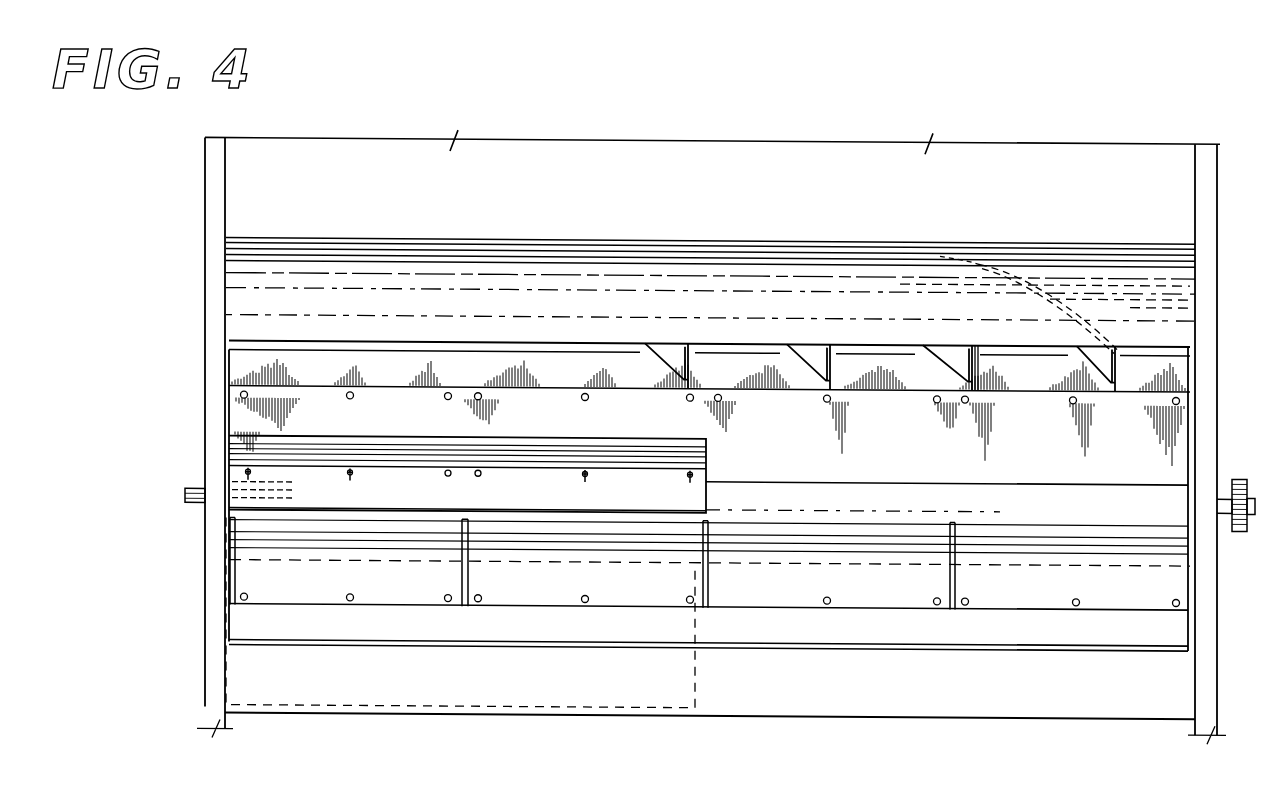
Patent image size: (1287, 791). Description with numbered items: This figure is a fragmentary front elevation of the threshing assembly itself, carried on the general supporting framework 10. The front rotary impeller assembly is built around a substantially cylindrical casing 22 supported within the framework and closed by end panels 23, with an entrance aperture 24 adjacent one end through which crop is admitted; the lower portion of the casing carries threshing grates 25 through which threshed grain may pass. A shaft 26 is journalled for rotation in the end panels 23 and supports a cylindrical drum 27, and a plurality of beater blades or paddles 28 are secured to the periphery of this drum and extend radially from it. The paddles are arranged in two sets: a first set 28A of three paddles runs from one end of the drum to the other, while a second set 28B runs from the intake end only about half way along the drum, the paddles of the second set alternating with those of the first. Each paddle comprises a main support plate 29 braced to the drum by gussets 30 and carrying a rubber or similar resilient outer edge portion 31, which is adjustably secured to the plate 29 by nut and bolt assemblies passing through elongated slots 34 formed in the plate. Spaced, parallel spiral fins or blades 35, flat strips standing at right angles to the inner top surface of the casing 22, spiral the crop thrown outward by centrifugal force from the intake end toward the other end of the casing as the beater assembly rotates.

The general supporting framework 10 is at (1042, 574).
The cylindrical casing 22 is at (286, 258).
The end panels 23 is at (205, 432).
The entrance aperture 24 is at (696, 702).
The threshing grates 25 is at (911, 722).
The shaft 26 is at (1232, 512).
The cylindrical drum 27 is at (834, 498).
The beater blades or paddles 28 is at (902, 372).
The first set of paddles 28A is at (1178, 466).
The second set of paddles 28B is at (706, 494).
The main support plate 29 is at (990, 455).
The gussets 30 is at (712, 566).
The resilient outer edge portions 31 is at (720, 376).
The elongated slots 34 is at (356, 470).
The spiral fins or blades 35 is at (996, 256).